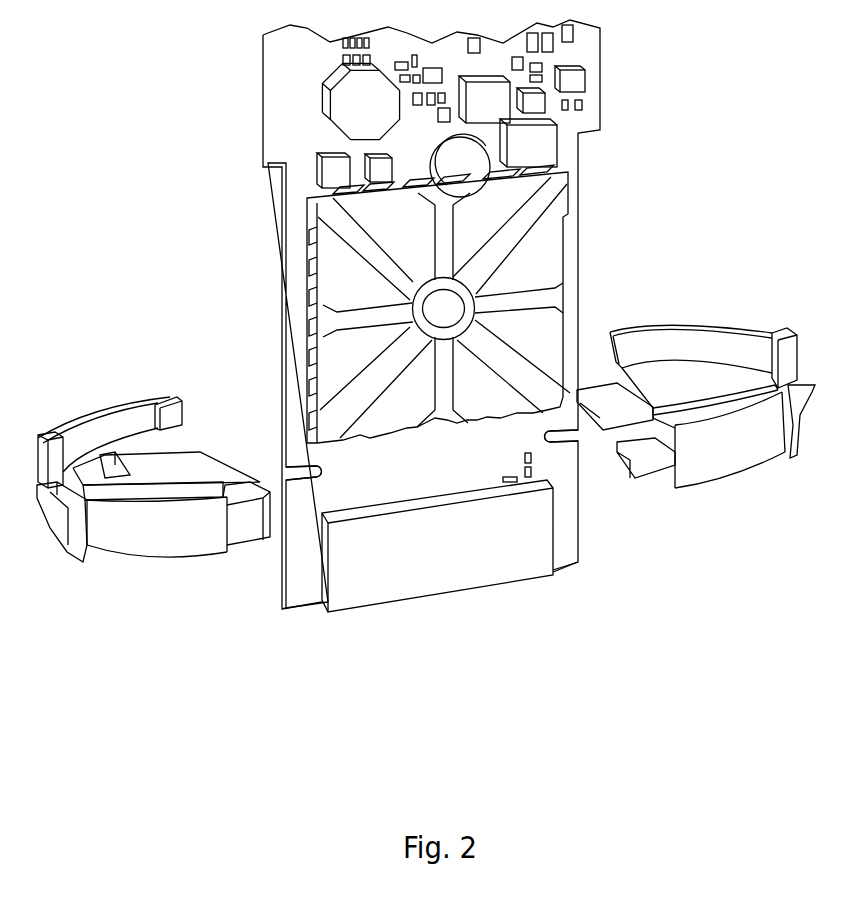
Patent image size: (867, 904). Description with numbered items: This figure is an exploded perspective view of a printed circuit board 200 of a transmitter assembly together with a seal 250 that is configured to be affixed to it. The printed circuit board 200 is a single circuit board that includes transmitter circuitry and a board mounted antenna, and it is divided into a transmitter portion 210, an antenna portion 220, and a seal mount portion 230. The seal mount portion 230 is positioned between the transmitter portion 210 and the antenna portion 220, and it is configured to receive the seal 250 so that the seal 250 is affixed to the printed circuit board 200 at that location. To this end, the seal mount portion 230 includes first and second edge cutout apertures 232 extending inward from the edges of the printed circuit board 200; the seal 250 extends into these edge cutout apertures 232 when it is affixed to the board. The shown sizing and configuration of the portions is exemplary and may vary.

The printed circuit board 200 is at (608, 61).
The transmitter portion 210 is at (283, 224).
The antenna portion 220 is at (282, 592).
The seal mount portion 230 is at (283, 457).
The first and second edge cutout apertures 232 is at (540, 438).
The seal 250 is at (164, 556).